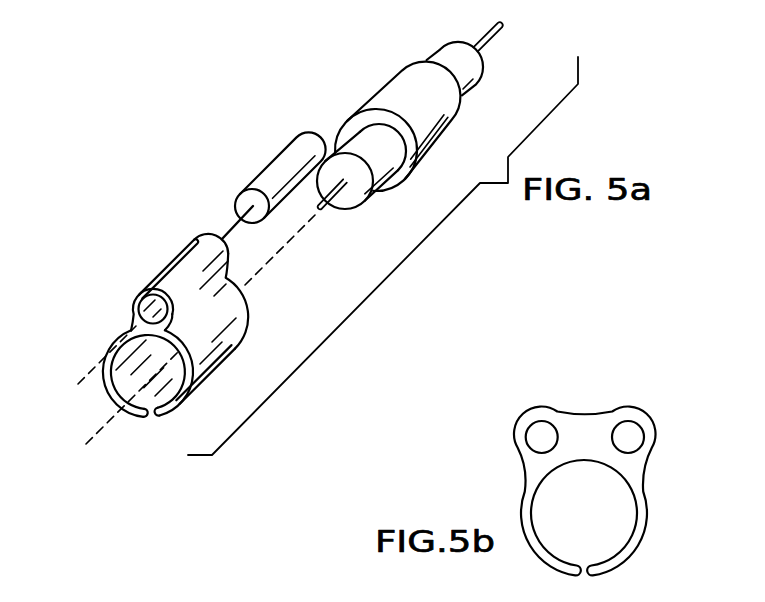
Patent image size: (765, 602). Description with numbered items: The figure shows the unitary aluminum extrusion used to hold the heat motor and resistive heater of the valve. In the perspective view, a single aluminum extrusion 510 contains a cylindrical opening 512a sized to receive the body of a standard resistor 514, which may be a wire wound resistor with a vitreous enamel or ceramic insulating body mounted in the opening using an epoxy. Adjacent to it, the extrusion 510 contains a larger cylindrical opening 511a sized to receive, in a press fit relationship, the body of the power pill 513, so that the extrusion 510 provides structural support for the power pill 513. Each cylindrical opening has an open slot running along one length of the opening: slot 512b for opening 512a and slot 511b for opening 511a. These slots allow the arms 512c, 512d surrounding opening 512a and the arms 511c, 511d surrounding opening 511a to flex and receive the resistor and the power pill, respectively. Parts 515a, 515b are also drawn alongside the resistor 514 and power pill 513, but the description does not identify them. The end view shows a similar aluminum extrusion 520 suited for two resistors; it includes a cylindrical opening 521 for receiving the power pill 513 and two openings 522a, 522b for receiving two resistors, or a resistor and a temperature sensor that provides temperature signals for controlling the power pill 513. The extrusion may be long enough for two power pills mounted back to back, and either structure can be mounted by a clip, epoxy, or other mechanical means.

In FIG. 5A, the aluminum extrusion 510 is at (148, 251).
In FIG. 5A, the cylindrical opening 511a is at (132, 388).
In FIG. 5A, the open slot 511b is at (148, 418).
In FIG. 5A, the arm 511c is at (190, 360).
In FIG. 5A, the arm 511d is at (113, 357).
In FIG. 5A, the cylindrical opening 512a is at (136, 312).
In FIG. 5A, the open slot 512b is at (198, 236).
In FIG. 5A, the arm 512c is at (175, 313).
In FIG. 5A, the arm 512d is at (135, 305).
In FIG. 5A, the power pill 513 is at (453, 130).
In FIG. 5A, the resistor 514 is at (285, 150).
In FIG. 5A, the rod 515a is at (345, 106).
In FIG. 5A, the pin 515b is at (211, 227).
In FIG. 5B, the aluminum extrusion 520 is at (643, 478).
In FIG. 5B, the cylindrical opening 521 is at (607, 536).
In FIG. 5B, the opening 522a is at (630, 437).
In FIG. 5B, the opening 522b is at (540, 436).